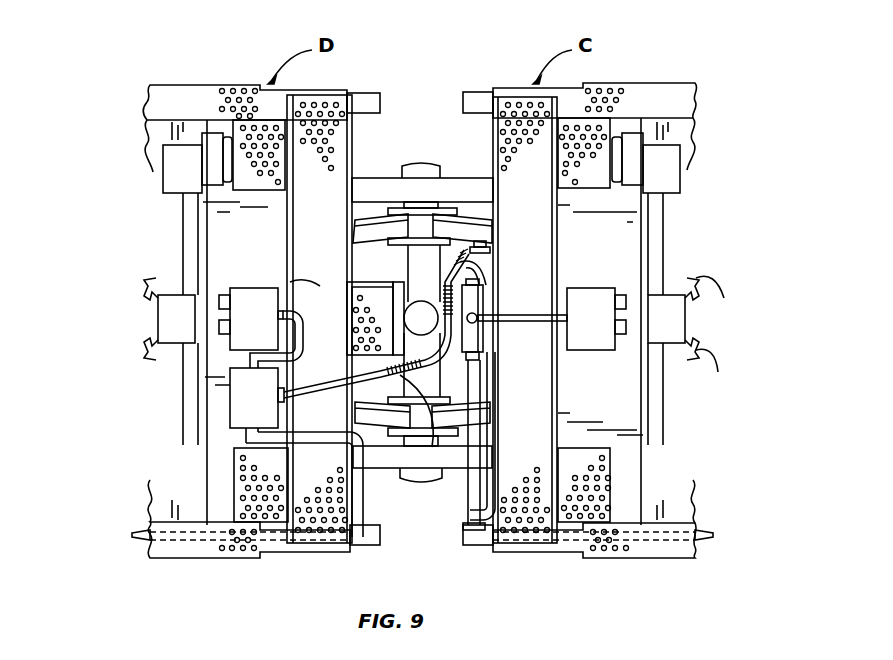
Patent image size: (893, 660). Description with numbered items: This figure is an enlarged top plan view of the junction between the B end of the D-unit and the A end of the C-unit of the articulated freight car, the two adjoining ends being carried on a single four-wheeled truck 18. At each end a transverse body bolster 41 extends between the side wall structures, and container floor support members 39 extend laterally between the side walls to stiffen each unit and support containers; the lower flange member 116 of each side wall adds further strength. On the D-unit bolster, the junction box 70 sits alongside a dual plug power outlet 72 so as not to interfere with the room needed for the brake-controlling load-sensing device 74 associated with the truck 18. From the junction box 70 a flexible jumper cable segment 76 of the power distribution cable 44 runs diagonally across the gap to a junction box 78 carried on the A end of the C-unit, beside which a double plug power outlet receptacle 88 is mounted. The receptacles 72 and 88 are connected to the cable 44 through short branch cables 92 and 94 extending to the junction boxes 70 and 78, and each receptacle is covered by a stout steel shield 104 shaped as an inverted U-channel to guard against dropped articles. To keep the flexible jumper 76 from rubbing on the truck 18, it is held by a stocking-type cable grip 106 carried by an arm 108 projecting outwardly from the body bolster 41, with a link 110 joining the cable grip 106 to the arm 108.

The four-wheeled truck 18 is at (380, 183).
The container floor support member 39 is at (185, 210).
The body bolster 41 is at (268, 205).
The power distribution cable 44 is at (150, 539).
The junction box 70 is at (247, 395).
The dual plug power outlet 72 is at (228, 290).
The brake-controlling load-sensing device 74 is at (370, 470).
The flexible jumper cable segment 76 is at (288, 394).
The junction box 78 is at (475, 338).
The double plug power outlet receptacle 88 is at (616, 292).
The branch cable 92 is at (326, 359).
The branch cable 94 is at (537, 333).
The shield 104 is at (255, 293).
The stocking-type cable grip 106 is at (425, 468).
The arm 108 is at (360, 413).
The link 110 is at (462, 262).
The lower flange member 116 is at (160, 162).